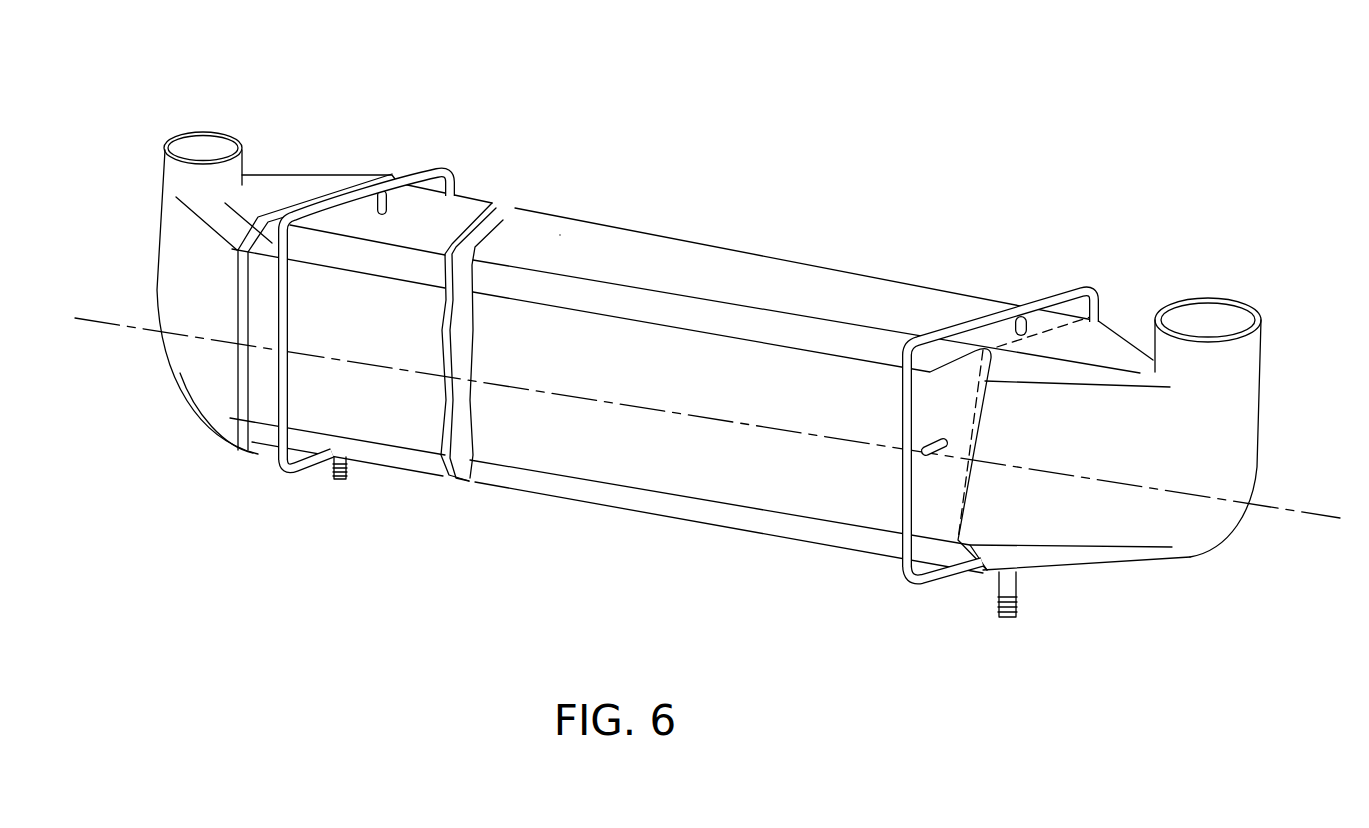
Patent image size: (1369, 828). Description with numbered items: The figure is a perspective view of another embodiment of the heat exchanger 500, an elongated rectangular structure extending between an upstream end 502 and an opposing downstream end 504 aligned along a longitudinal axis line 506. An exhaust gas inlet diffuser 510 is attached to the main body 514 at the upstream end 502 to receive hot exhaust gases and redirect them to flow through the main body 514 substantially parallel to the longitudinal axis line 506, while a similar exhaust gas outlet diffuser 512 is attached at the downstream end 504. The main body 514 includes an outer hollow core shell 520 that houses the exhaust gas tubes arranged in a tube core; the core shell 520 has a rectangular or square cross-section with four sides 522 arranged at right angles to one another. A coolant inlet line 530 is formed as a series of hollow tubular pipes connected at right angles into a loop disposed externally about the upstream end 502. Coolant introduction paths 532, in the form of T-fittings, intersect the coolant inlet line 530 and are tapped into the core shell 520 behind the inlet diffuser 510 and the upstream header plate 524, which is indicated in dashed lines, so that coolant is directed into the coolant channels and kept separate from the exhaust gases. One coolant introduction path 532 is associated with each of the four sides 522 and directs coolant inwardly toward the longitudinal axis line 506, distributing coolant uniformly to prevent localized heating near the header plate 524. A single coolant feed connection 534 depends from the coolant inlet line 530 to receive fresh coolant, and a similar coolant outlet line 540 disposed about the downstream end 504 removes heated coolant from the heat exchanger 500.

The heat exchanger 500 is at (853, 112).
The upstream end 502 is at (1095, 302).
The downstream end 504 is at (272, 243).
The longitudinal axis line 506 is at (1288, 508).
The exhaust gas inlet diffuser 510 is at (1127, 508).
The exhaust gas outlet diffuser 512 is at (157, 290).
The main body 514 is at (543, 480).
The core shell 520 is at (493, 206).
The sides 522 is at (677, 268).
The upstream header plate 524 is at (957, 507).
The coolant inlet line 530 is at (961, 328).
The coolant introduction paths 532 is at (1022, 318).
The coolant feed connection 534 is at (1013, 582).
The coolant outlet line 540 is at (413, 170).